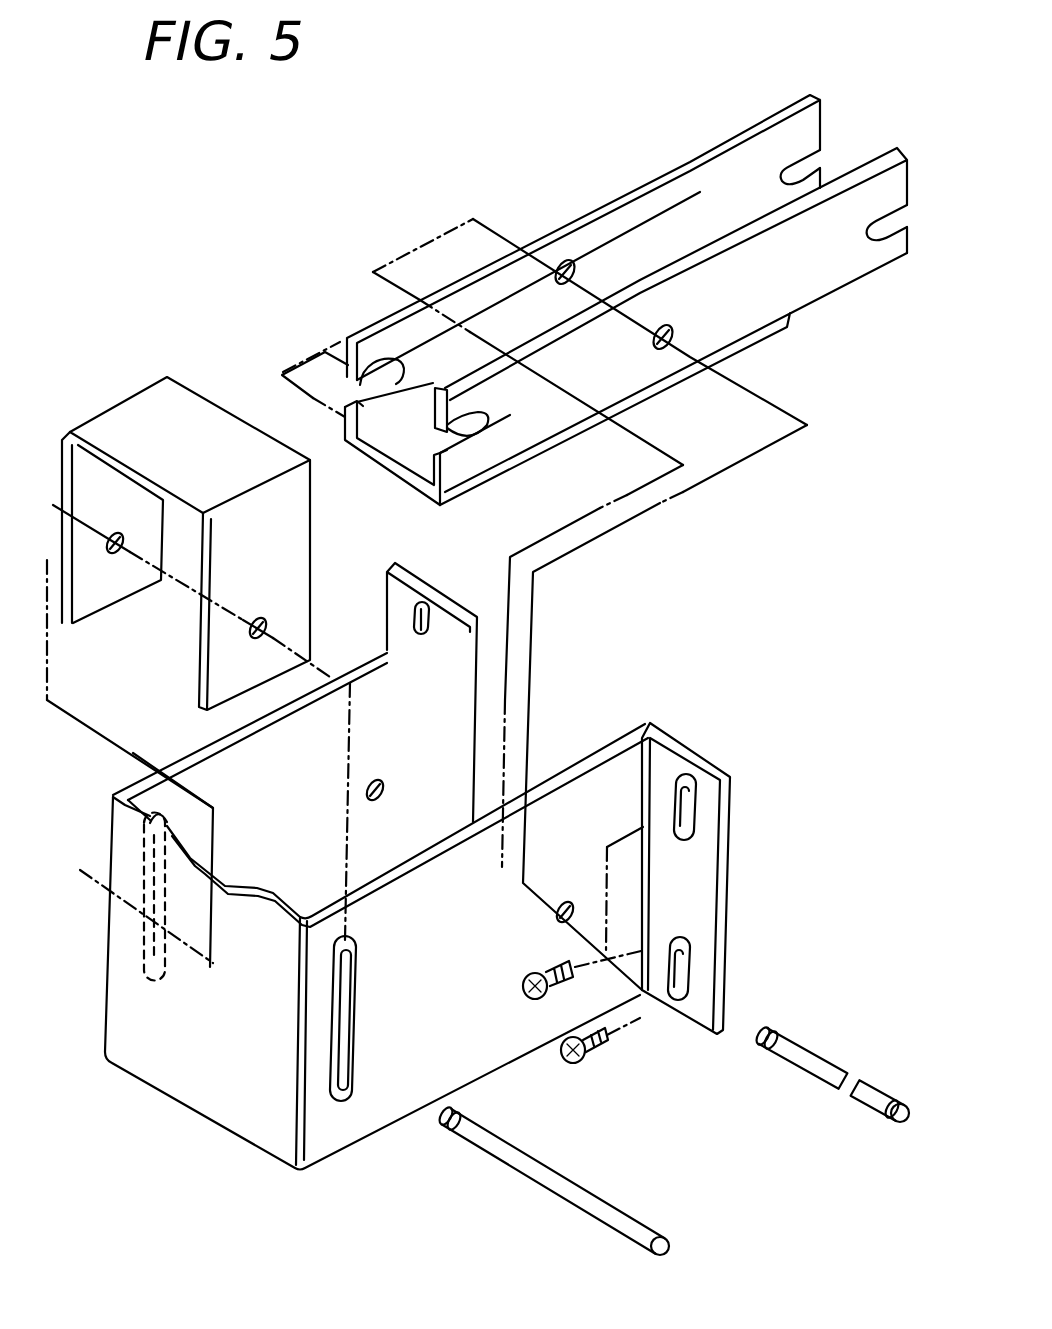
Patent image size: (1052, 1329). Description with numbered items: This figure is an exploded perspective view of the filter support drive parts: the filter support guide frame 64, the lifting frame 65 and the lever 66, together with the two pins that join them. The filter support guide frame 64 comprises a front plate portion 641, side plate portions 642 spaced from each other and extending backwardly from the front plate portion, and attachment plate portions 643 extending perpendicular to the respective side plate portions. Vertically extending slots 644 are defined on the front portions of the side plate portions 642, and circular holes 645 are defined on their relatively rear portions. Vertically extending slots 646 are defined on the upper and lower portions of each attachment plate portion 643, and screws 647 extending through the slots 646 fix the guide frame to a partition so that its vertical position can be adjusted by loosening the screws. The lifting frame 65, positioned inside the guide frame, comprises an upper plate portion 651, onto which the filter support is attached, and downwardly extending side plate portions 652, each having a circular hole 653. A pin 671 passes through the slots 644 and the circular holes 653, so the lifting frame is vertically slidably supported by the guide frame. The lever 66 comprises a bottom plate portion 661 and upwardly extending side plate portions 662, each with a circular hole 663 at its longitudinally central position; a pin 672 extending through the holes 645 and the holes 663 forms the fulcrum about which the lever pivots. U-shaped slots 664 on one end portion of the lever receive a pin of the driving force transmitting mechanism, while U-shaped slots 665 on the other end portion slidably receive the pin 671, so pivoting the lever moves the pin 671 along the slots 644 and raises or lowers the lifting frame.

The filter support guide frame 64 is at (237, 1097).
The front plate portion 641 is at (160, 1068).
The side plate portions 642 is at (187, 757).
The attachment plate portions 643 is at (447, 590).
The vertically extending slots 644 is at (150, 872).
The circular holes 645 is at (380, 787).
The vertically extending slots 646 is at (417, 630).
The screws 647 is at (557, 1047).
The lifting frame 65 is at (213, 371).
The upper plate portion 651 is at (130, 416).
The side plate portions 652 is at (110, 594).
The circular hole 653 is at (98, 561).
The lever 66 is at (670, 132).
The bottom plate portion 661 is at (378, 463).
The side plate portions 662 is at (757, 230).
The circular hole 663 is at (572, 262).
The U-shaped slots 664 is at (883, 203).
The U-shaped slots 665 is at (473, 417).
The pin 671 is at (517, 1150).
The pin 672 is at (830, 1073).